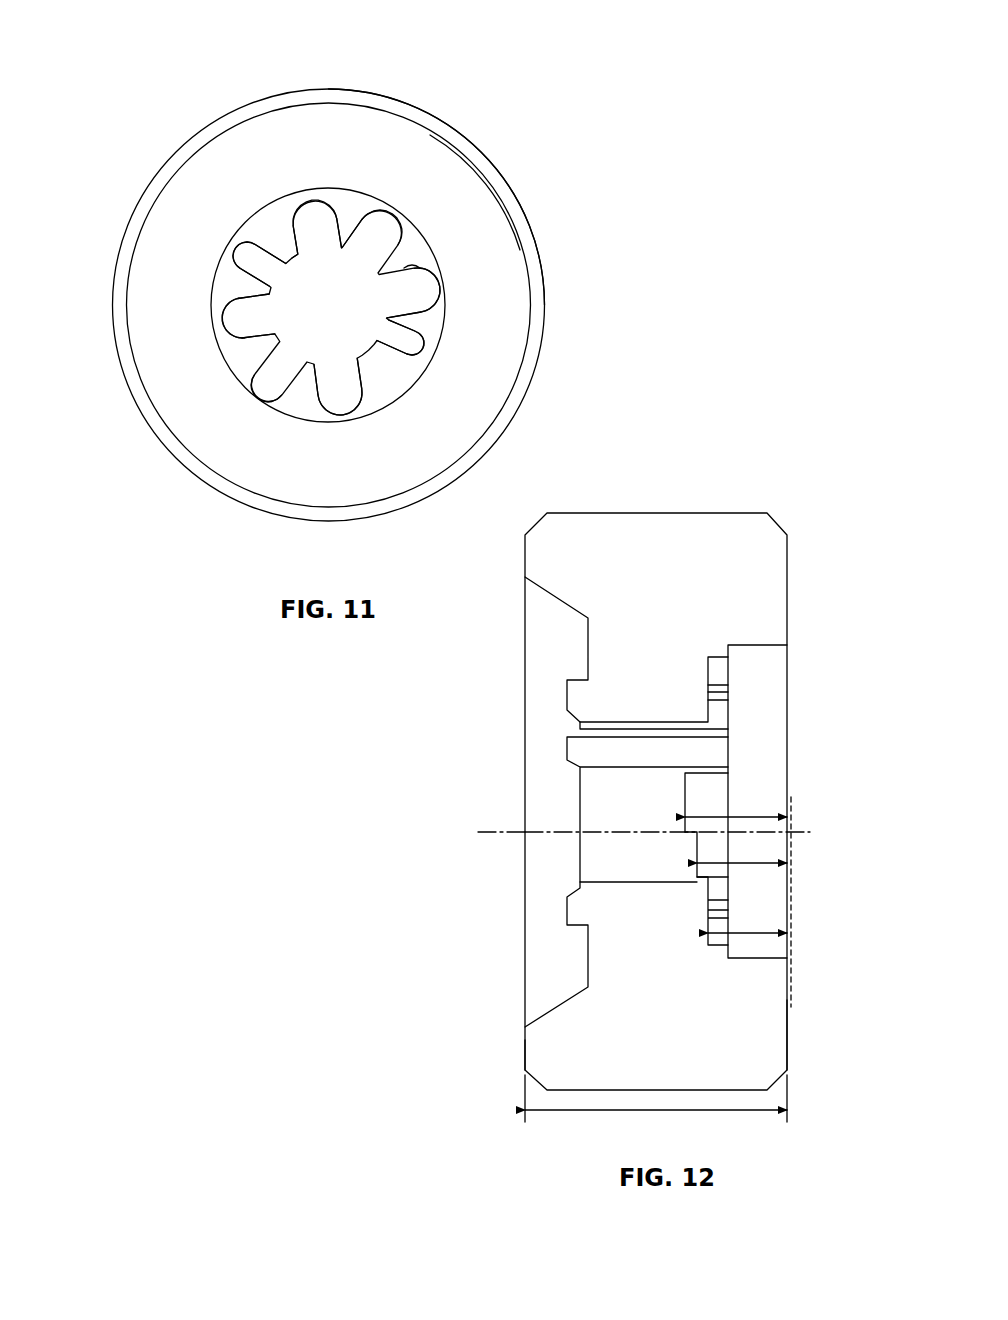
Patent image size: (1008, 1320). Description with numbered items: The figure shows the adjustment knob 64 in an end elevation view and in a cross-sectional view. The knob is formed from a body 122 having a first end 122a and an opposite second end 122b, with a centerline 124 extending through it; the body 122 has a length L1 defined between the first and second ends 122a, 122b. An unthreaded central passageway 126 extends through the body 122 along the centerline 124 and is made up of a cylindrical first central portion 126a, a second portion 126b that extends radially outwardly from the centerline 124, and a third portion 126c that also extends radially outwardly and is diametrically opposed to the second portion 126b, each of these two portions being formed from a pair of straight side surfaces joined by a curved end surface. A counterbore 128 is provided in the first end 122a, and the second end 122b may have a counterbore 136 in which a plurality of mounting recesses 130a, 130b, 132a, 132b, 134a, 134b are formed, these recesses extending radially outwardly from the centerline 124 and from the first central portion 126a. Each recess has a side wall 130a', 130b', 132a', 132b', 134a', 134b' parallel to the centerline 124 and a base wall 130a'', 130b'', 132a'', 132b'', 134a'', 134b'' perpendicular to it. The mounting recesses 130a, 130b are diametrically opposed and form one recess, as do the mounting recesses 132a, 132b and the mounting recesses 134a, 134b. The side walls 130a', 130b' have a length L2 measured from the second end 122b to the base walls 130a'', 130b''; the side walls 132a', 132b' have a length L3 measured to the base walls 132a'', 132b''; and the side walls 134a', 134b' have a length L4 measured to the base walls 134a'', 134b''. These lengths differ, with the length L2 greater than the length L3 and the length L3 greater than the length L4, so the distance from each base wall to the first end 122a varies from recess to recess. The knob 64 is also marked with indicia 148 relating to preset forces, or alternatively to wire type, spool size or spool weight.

In FIG. 11, the adjustment knob 64 is at (518, 87).
In FIG. 12, the adjustment knob 64 is at (750, 462).
In FIG. 11, the body 122 is at (480, 187).
In FIG. 12, the body 122 is at (640, 545).
In FIG. 12, the first end 122a is at (525, 1048).
In FIG. 11, the second end 122b is at (470, 192).
In FIG. 12, the second end 122b is at (790, 1028).
In FIG. 12, the centerline 124 is at (513, 835).
In FIG. 11, the central passageway 126 is at (300, 250).
In FIG. 11, the first central portion 126a is at (331, 307).
In FIG. 11, the second portion 126b is at (268, 382).
In FIG. 11, the third portion 126c is at (373, 200).
In FIG. 12, the third portion 126c is at (712, 755).
In FIG. 12, the counterbore 128 is at (547, 1010).
In FIG. 11, the mounting recess 130a is at (138, 300).
In FIG. 11, the side wall 130a' is at (162, 378).
In FIG. 11, the base wall 130a'' is at (151, 318).
In FIG. 11, the mounting recess 130b is at (513, 273).
In FIG. 12, the mounting recess 130b is at (775, 798).
In FIG. 11, the side wall 130b' is at (512, 232).
In FIG. 11, the base wall 130b'' is at (508, 304).
In FIG. 11, the mounting recess 132a is at (195, 173).
In FIG. 11, the side wall 132a' is at (156, 234).
In FIG. 11, the base wall 132a'' is at (246, 160).
In FIG. 11, the mounting recess 132b is at (504, 404).
In FIG. 12, the mounting recess 132b is at (781, 854).
In FIG. 11, the side wall 132b' is at (501, 360).
In FIG. 11, the base wall 132b'' is at (495, 392).
In FIG. 11, the mounting recess 134a is at (309, 137).
In FIG. 12, the mounting recess 134a is at (721, 706).
In FIG. 11, the side wall 134a' is at (382, 137).
In FIG. 11, the base wall 134a'' is at (345, 126).
In FIG. 11, the mounting recess 134b is at (304, 477).
In FIG. 12, the mounting recess 134b is at (782, 911).
In FIG. 11, the side wall 134b' is at (404, 453).
In FIG. 11, the base wall 134b'' is at (341, 466).
In FIG. 11, the counterbore 136 is at (345, 247).
In FIG. 12, the counterbore 136 is at (750, 647).
In FIG. 11, the indicia 148 is at (487, 350).
In FIG. 12, the length L1 is at (645, 1112).
In FIG. 12, the length L2 is at (745, 818).
In FIG. 12, the length L3 is at (752, 866).
In FIG. 12, the length L4 is at (752, 937).